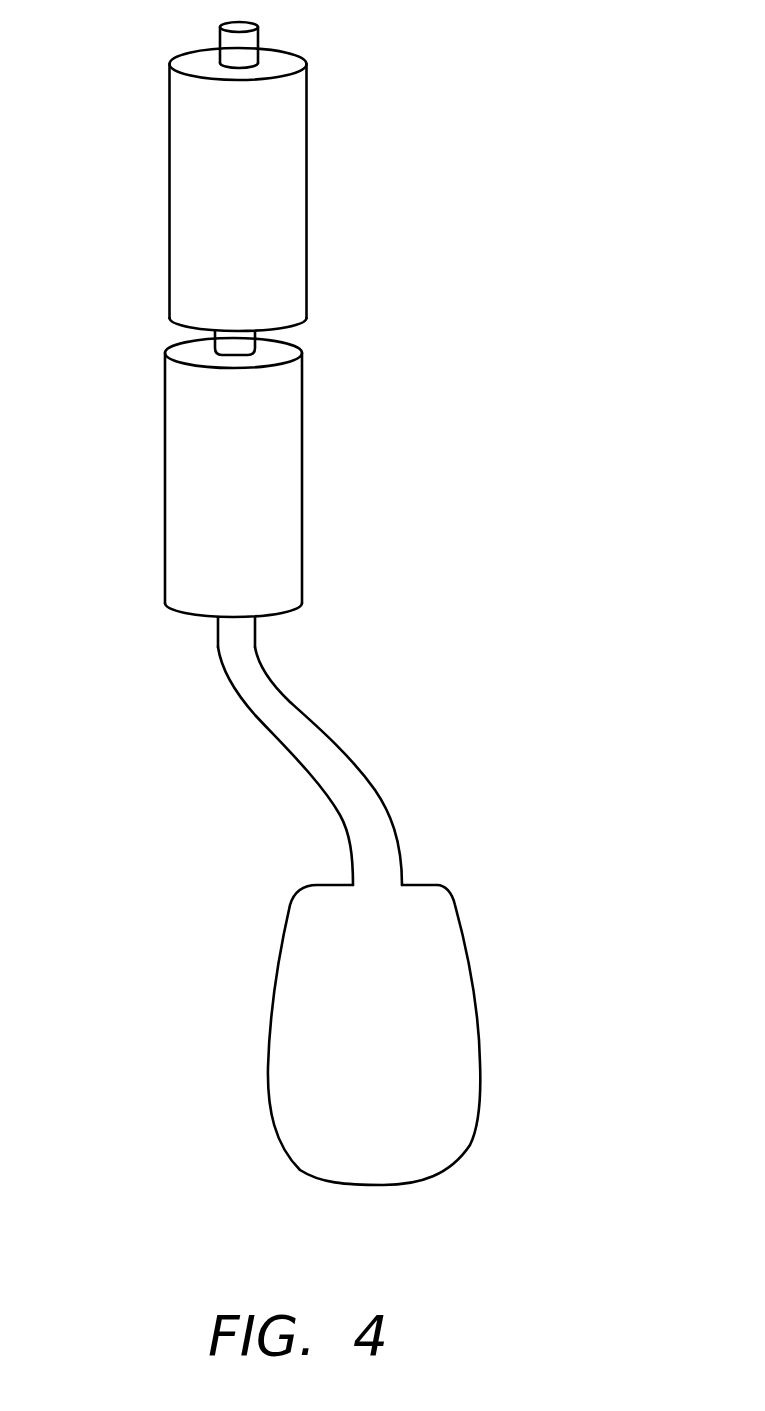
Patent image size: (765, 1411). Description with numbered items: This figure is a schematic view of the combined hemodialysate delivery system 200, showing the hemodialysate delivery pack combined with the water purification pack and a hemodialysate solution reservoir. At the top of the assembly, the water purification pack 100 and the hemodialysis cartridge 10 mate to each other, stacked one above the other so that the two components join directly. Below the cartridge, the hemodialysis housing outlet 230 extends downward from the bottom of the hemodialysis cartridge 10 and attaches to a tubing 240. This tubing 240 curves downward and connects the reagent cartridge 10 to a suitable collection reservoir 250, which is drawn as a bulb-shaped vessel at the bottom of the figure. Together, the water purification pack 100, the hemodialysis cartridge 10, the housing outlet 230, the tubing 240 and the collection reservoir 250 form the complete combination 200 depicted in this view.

The cleaning device assembly 200 is at (183, 800).
The water purification pack 100 is at (275, 195).
The hemodialysis cartridge 10 is at (270, 440).
The hemodialysis housing outlet 230 is at (245, 630).
The tubing 240 is at (348, 780).
The collection reservoir 250 is at (443, 962).